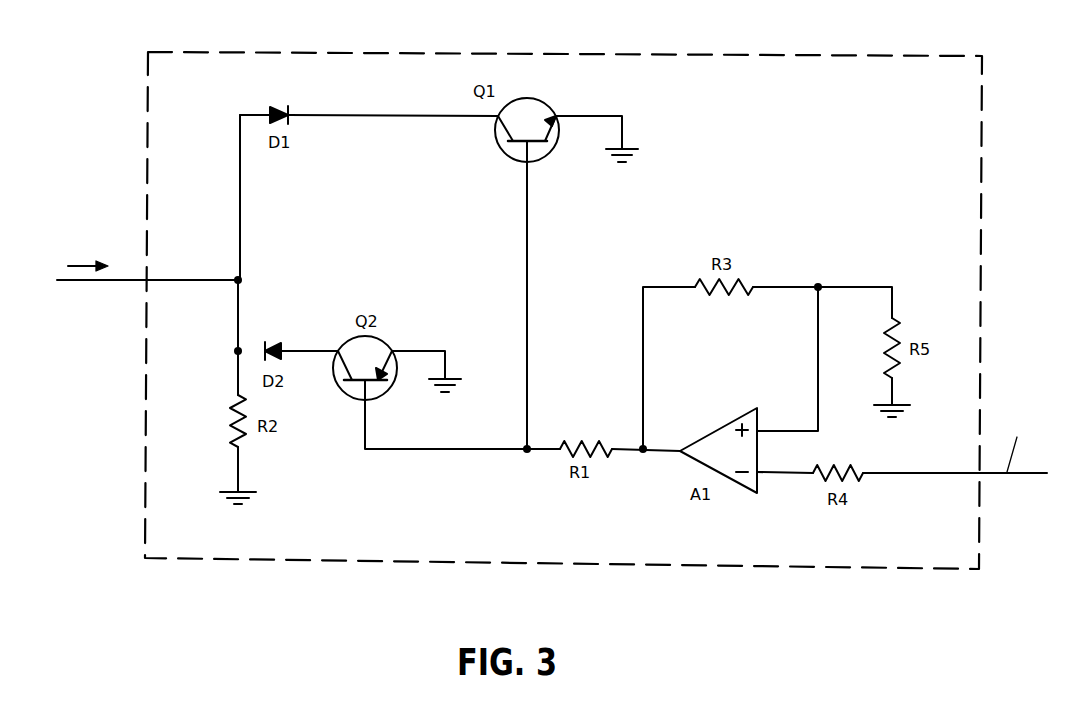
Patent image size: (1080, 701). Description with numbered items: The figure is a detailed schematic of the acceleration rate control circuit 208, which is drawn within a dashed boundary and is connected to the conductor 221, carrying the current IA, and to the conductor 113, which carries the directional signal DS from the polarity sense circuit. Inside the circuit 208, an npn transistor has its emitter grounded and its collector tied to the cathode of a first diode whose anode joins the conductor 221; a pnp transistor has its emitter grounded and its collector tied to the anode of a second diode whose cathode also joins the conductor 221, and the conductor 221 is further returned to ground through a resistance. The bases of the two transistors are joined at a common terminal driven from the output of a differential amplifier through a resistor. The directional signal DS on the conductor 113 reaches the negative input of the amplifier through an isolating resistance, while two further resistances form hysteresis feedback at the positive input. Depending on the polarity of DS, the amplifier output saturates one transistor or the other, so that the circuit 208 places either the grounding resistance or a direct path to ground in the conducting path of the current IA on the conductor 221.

The acceleration rate control circuit 208 is at (553, 55).
The conductor 221 is at (103, 281).
The conductor 113 is at (1018, 474).